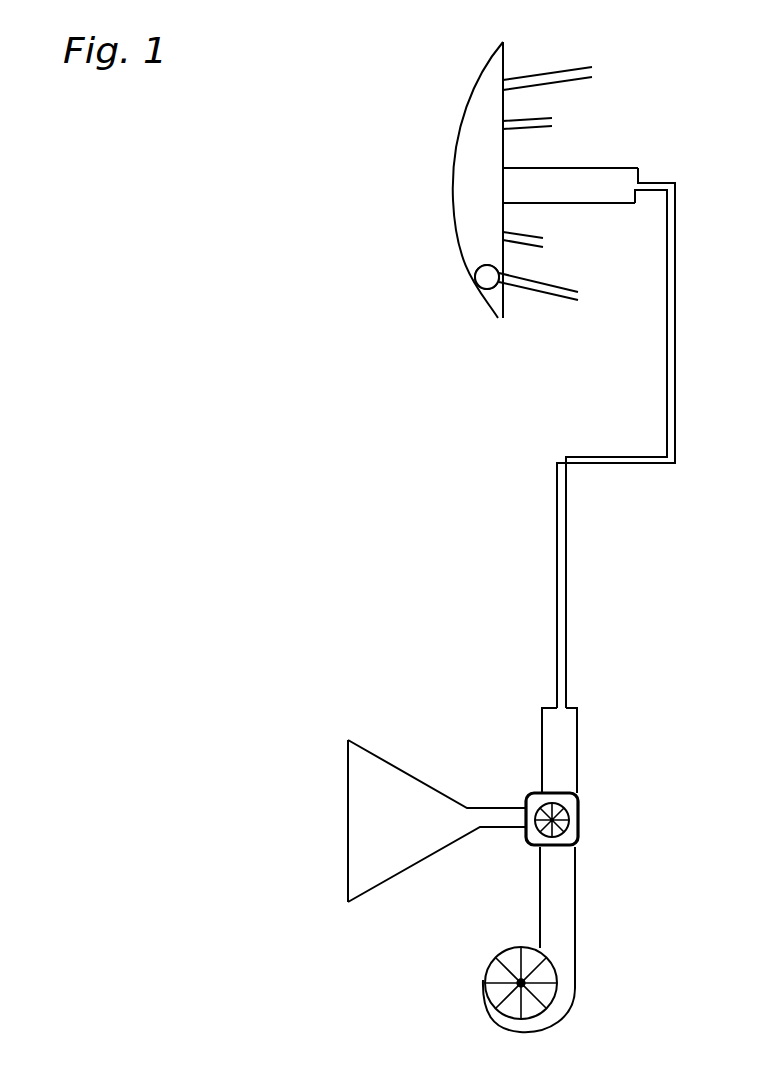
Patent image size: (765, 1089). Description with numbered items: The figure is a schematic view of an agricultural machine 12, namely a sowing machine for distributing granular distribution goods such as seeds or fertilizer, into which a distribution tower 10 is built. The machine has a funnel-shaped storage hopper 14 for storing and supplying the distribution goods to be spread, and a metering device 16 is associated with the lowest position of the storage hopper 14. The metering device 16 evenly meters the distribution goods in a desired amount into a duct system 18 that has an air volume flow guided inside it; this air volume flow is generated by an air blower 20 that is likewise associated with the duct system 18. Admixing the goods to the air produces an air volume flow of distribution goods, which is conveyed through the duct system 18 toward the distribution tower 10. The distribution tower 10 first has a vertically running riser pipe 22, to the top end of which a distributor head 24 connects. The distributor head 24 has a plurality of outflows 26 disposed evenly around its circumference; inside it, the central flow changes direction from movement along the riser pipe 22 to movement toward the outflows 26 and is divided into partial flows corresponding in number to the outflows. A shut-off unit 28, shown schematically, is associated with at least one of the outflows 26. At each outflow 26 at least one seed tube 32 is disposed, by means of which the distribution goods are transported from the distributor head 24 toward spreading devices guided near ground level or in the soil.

The distribution tower 10 is at (392, 165).
The agricultural machine 12 is at (407, 442).
The storage hopper 14 is at (405, 832).
The metering device 16 is at (583, 817).
The duct system 18 is at (569, 762).
The air blower 20 is at (563, 1013).
The riser pipe 22 is at (608, 143).
The distributor head 24 is at (472, 103).
The outflows 26 is at (473, 278).
The shut-off unit 28 is at (487, 277).
The seed tube 32 is at (580, 57).